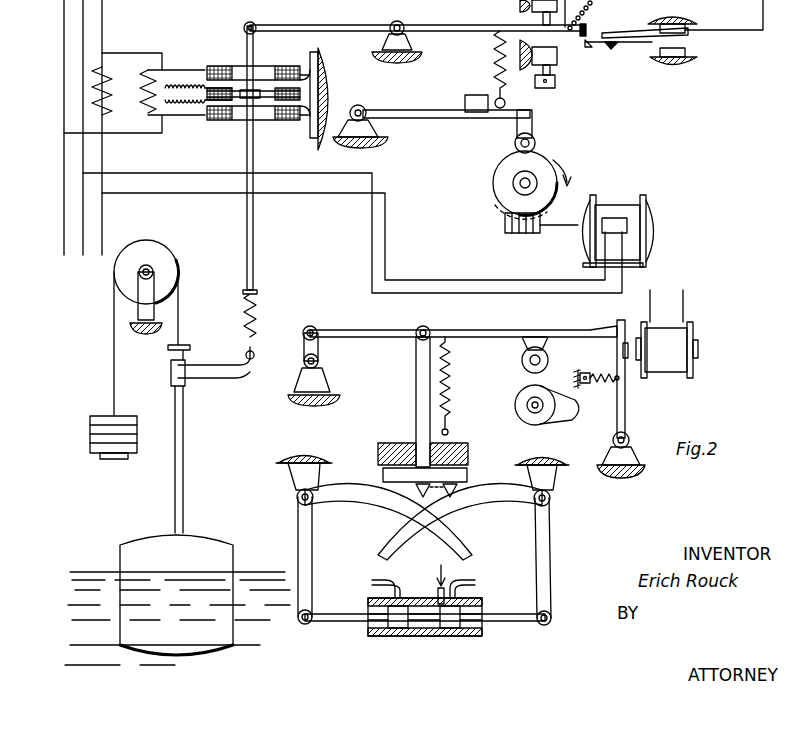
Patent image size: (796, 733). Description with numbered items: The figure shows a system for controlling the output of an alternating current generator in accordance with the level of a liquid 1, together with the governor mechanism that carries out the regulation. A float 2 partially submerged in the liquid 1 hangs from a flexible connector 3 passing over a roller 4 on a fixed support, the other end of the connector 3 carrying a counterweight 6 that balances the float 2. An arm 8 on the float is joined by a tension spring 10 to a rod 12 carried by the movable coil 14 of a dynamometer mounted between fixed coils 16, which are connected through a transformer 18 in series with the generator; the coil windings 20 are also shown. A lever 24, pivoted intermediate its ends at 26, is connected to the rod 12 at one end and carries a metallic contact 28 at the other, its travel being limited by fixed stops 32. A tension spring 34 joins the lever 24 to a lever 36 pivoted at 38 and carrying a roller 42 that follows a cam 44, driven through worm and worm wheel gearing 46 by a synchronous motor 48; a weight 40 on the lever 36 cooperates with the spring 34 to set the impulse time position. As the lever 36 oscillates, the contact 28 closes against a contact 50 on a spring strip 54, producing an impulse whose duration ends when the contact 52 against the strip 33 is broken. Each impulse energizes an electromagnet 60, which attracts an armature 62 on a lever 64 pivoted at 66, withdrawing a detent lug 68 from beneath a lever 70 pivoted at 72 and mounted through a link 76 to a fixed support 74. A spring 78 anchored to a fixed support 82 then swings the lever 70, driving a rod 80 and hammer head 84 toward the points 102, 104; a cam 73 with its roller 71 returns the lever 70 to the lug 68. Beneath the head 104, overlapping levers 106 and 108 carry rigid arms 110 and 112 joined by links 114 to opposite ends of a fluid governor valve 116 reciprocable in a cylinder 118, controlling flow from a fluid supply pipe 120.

In FIG. 1, the liquid 1 is at (92, 587).
In FIG. 1, the float 2 is at (190, 545).
In FIG. 1, the flexible connector 3 is at (116, 364).
In FIG. 1, the roller 4 is at (160, 266).
In FIG. 1, the counterweight 6 is at (100, 434).
In FIG. 1, the arm 8 is at (226, 375).
In FIG. 1, the tension spring 10 is at (258, 330).
In FIG. 1, the rod 12 is at (252, 170).
In FIG. 1, the movable coil 14 is at (293, 110).
In FIG. 1, the fixed coils 16 is at (215, 66).
In FIG. 1, the transformer 18 is at (148, 70).
In FIG. 1, the coil windings 20 is at (185, 98).
In FIG. 1, the lever 24 is at (328, 25).
In FIG. 1, the pivot of lever 26 is at (404, 36).
In FIG. 1, the metallic electric contact 28 is at (587, 30).
In FIG. 1, the fixed stops 32 is at (567, 72).
In FIG. 1, the contact blade 33 is at (636, 32).
In FIG. 1, the tension spring 34 is at (494, 52).
In FIG. 1, the lever 36 is at (446, 118).
In FIG. 1, the pivot of lever 38 is at (366, 110).
In FIG. 1, the weight 40 is at (476, 112).
In FIG. 1, the roller 42 is at (535, 138).
In FIG. 1, the cam 44 is at (545, 165).
In FIG. 1, the worm and worm wheel gearing 46 is at (506, 217).
In FIG. 1, the synchronous motor 48 is at (616, 208).
In FIG. 1, the contact 50 is at (588, 46).
In FIG. 1, the contact 52 is at (612, 48).
In FIG. 1, the spring strip 54 is at (656, 62).
In FIG. 2, the electromagnet 60 is at (669, 334).
In FIG. 2, the armature 62 is at (630, 356).
In FIG. 2, the armature lever 64 is at (624, 398).
In FIG. 2, the pivot of armature lever 66 is at (630, 441).
In FIG. 2, the detent lug 68 is at (618, 340).
In FIG. 2, the lever 70 is at (500, 338).
In FIG. 2, the roller 71 is at (548, 360).
In FIG. 2, the pivot 72 is at (416, 336).
In FIG. 2, the cam 73 is at (566, 410).
In FIG. 2, the fixed support 74 is at (320, 366).
In FIG. 2, the link 76 is at (300, 346).
In FIG. 2, the spring 78 is at (450, 392).
In FIG. 2, the rod 80 is at (420, 385).
In FIG. 2, the fixed support 82 is at (396, 443).
In FIG. 2, the hammer head 84 is at (455, 474).
In FIG. 2, the point 102 is at (416, 486).
In FIG. 2, the head 104 is at (458, 487).
In FIG. 2, the lever 106 is at (364, 507).
In FIG. 2, the lever 108 is at (510, 502).
In FIG. 2, the arm 110 is at (307, 590).
In FIG. 2, the arm 112 is at (545, 550).
In FIG. 2, the links 114 is at (525, 622).
In FIG. 2, the fluid governor valve 116 is at (452, 640).
In FIG. 2, the cylinder 118 is at (478, 605).
In FIG. 2, the fluid supply pipe 120 is at (426, 600).